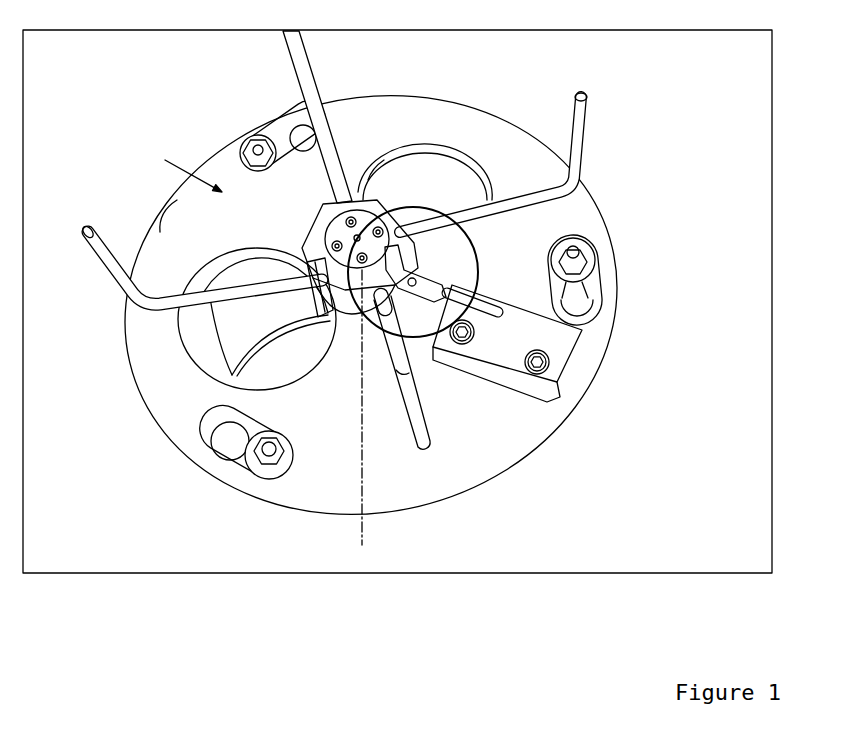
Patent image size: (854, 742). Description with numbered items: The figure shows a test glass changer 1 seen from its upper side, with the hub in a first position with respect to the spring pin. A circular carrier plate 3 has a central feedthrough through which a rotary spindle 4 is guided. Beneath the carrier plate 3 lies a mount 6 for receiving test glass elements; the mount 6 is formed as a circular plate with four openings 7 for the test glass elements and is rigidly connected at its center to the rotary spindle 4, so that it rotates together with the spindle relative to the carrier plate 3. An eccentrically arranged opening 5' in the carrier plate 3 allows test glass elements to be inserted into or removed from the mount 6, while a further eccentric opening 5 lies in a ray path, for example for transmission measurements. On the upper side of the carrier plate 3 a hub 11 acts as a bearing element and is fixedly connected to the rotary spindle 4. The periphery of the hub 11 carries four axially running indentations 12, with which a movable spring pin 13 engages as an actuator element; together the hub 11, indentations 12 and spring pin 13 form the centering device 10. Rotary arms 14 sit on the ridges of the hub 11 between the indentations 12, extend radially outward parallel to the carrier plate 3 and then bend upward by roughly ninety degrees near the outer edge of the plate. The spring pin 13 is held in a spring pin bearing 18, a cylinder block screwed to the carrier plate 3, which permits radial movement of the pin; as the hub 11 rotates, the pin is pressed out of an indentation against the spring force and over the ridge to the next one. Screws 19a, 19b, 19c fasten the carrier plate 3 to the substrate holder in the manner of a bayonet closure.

The test glass changer 1 is at (654, 524).
The carrier plate 3 is at (340, 413).
The rotary spindle 4 is at (362, 419).
The further opening 5 is at (431, 126).
The opening 5' is at (201, 356).
The mount 6 is at (229, 332).
The openings 7 is at (260, 365).
The centering device 10 is at (470, 343).
The hub 11 is at (311, 220).
The indentations 12 is at (327, 297).
The spring pin 13 is at (440, 279).
The rotary arms 14 is at (587, 83).
The spring pin bearing 18 is at (563, 343).
The screw 19a is at (250, 135).
The screw 19b is at (258, 480).
The screw 19c is at (597, 258).